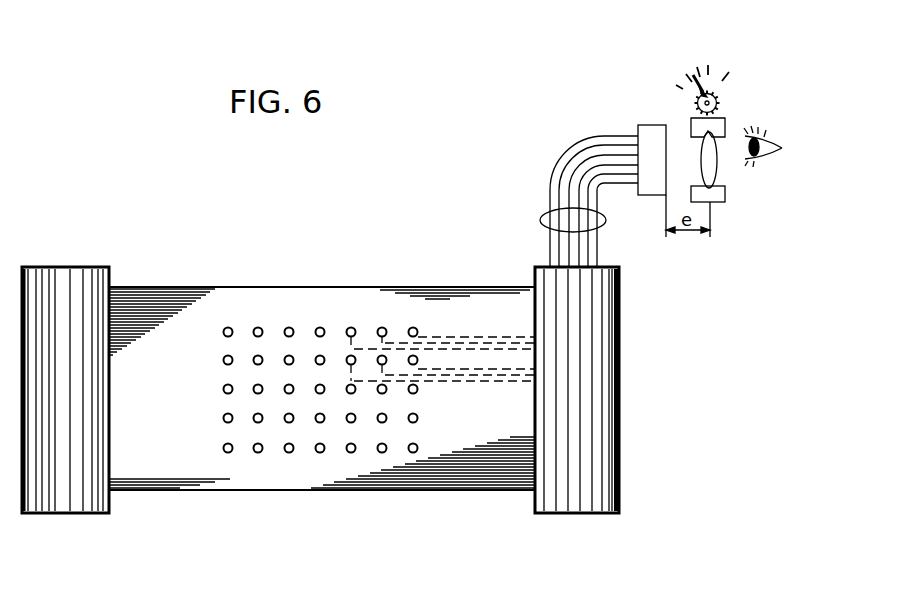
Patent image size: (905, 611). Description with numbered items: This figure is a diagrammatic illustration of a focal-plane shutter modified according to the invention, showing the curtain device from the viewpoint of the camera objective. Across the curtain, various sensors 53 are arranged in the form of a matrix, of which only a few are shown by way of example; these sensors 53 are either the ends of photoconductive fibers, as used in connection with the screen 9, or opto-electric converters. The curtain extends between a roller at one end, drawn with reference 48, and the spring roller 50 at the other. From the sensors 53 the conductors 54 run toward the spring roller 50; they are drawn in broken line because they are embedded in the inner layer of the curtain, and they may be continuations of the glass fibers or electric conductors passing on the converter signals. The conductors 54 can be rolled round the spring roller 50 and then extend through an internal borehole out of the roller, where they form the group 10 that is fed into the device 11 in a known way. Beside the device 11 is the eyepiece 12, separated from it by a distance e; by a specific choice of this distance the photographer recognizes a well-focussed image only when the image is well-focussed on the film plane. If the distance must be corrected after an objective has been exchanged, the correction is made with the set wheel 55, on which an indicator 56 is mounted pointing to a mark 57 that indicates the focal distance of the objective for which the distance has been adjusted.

The screen 9 is at (200, 450).
The left roller 48 is at (57, 267).
The spring roller 50 is at (603, 267).
The sensors 53 is at (412, 452).
The conductors 54 is at (455, 376).
The group 10 is at (541, 219).
The device 11 is at (650, 187).
The eyepiece 12 is at (713, 163).
The set wheel 55 is at (710, 100).
The indicator 56 is at (695, 85).
The mark 57 is at (693, 67).